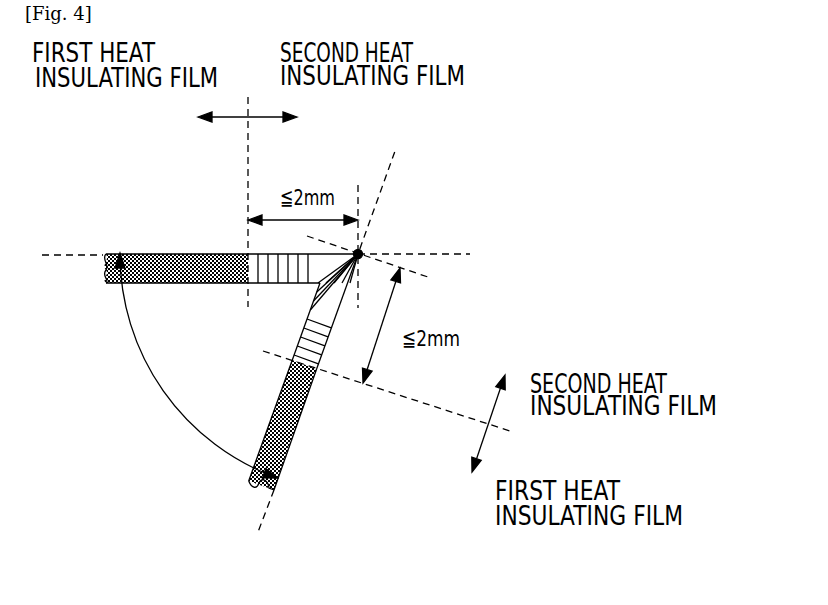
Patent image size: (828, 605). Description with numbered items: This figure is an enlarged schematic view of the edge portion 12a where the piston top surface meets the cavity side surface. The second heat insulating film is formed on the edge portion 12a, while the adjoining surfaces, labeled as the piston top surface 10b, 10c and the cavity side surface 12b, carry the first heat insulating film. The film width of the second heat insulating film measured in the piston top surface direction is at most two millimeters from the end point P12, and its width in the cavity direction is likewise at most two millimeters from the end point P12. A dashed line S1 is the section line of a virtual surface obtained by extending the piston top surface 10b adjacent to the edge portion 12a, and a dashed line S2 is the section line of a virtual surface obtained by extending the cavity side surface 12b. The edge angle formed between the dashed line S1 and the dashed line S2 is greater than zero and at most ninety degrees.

The piston top surface 10b is at (231, 226).
The first heat insulating film (horizontal portion) 10c is at (170, 254).
The edge portion 12a is at (327, 347).
The cavity side surface 12b is at (305, 412).
The dashed line S1 is at (271, 258).
The dashed line S2 is at (338, 330).
The end point P12 is at (362, 250).